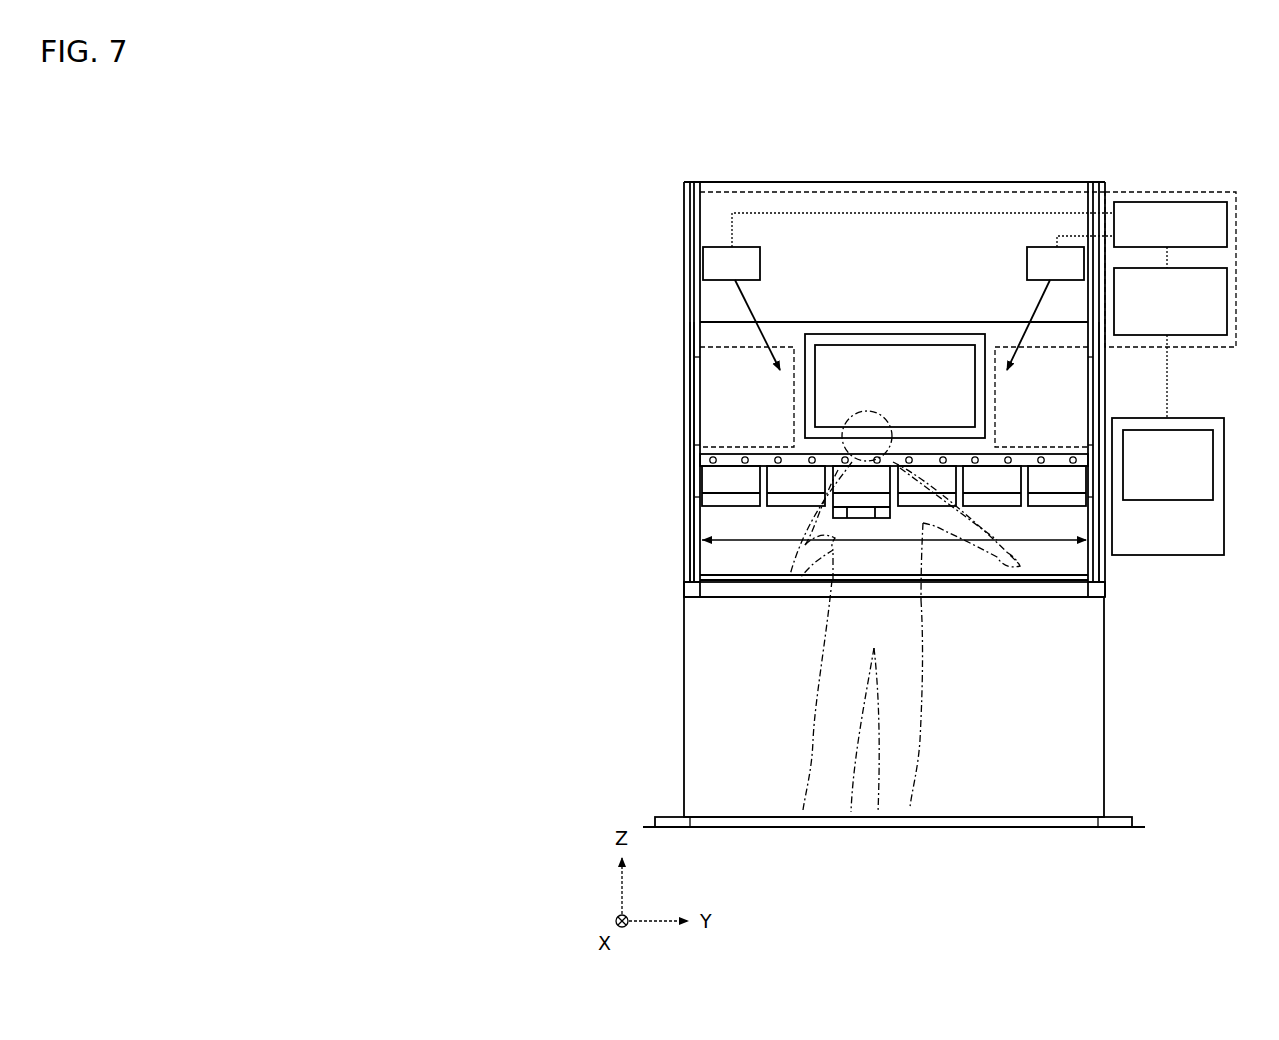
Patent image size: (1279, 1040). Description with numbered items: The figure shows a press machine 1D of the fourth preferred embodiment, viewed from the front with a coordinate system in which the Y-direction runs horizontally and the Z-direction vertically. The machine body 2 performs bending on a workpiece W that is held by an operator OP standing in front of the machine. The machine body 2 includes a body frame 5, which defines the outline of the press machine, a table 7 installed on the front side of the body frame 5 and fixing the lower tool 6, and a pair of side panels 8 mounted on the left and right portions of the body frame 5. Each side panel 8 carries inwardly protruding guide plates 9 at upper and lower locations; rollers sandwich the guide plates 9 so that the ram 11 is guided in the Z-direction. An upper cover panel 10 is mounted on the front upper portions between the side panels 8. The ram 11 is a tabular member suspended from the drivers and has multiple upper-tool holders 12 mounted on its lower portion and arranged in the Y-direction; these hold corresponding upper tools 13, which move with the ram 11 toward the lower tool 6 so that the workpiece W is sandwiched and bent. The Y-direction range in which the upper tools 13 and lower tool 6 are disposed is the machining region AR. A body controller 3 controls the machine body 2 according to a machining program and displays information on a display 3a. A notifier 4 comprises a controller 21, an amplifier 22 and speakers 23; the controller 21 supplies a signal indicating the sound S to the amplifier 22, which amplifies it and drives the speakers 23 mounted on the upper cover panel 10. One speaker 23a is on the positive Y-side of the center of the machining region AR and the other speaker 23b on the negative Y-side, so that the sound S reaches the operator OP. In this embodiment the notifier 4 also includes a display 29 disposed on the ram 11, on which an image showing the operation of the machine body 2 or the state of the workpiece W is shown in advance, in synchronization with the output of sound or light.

The press machine 1D is at (920, 116).
The machine body 2 is at (1127, 596).
The body controller 3 is at (1224, 490).
The display 3a is at (1213, 462).
The notifier 4 is at (1168, 192).
The body frame 5 is at (684, 290).
The lower tool 6 is at (684, 590).
The table 7 is at (1105, 708).
The side panels 8 is at (690, 371).
The guide plates 9 is at (700, 445).
The upper cover panel 10 is at (900, 245).
The ram 11 is at (715, 400).
The upper-tool holders 12 is at (795, 475).
The upper tools 13 is at (860, 518).
The controller 21 is at (1227, 308).
The amplifier 22 is at (1227, 226).
The speakers 23 is at (906, 213).
The speaker 23a is at (1050, 247).
The speaker 23b is at (727, 247).
The display 29 is at (897, 344).
The sound S is at (750, 312).
The workpiece W is at (1045, 571).
The machining region AR is at (945, 545).
The operator OP is at (924, 648).